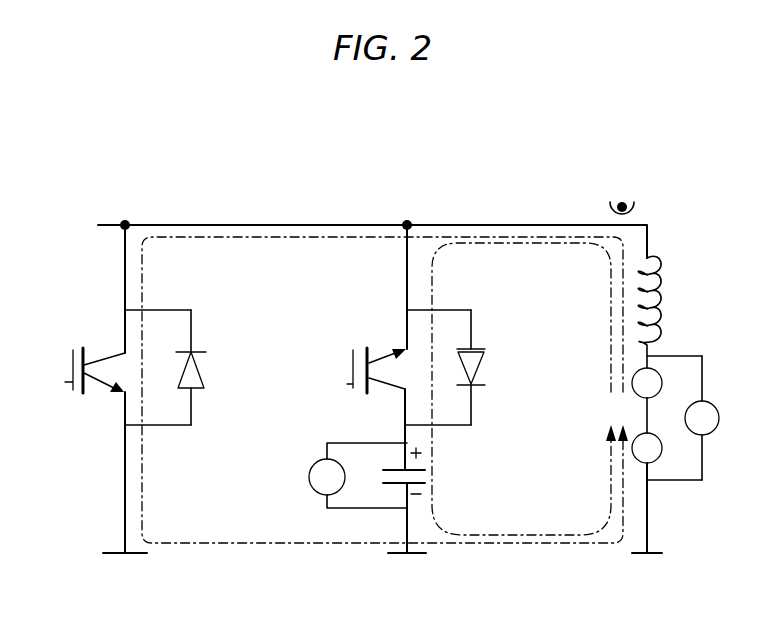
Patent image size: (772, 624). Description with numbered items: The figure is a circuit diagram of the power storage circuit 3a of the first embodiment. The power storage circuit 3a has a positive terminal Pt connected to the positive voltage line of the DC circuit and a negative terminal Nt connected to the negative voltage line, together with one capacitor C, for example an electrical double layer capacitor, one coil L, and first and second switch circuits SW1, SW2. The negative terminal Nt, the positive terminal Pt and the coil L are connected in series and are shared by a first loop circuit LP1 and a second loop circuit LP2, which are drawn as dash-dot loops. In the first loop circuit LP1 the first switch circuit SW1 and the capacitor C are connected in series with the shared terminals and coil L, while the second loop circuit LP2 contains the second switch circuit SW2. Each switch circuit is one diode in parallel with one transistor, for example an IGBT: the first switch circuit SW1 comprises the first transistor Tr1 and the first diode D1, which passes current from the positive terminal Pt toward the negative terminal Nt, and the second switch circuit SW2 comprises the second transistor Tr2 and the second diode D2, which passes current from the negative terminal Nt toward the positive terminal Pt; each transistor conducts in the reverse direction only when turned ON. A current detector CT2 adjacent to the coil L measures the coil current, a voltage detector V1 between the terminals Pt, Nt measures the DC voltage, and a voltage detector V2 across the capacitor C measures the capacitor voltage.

The power storage circuit 3a is at (466, 185).
The first switch circuit SW1 is at (545, 280).
The second switch circuit SW2 is at (211, 298).
The first transistor Tr1 is at (353, 350).
The second transistor Tr2 is at (73, 351).
The first diode D1 is at (484, 366).
The second diode D2 is at (206, 376).
The capacitor C is at (428, 471).
The coil L is at (661, 280).
The current detector CT2 is at (636, 210).
The voltage detector V1 is at (702, 418).
The voltage detector V2 is at (358, 475).
The positive terminal Pt is at (667, 394).
The negative terminal Nt is at (667, 456).
The first loop circuit LP1 is at (452, 531).
The second loop circuit LP2 is at (205, 541).